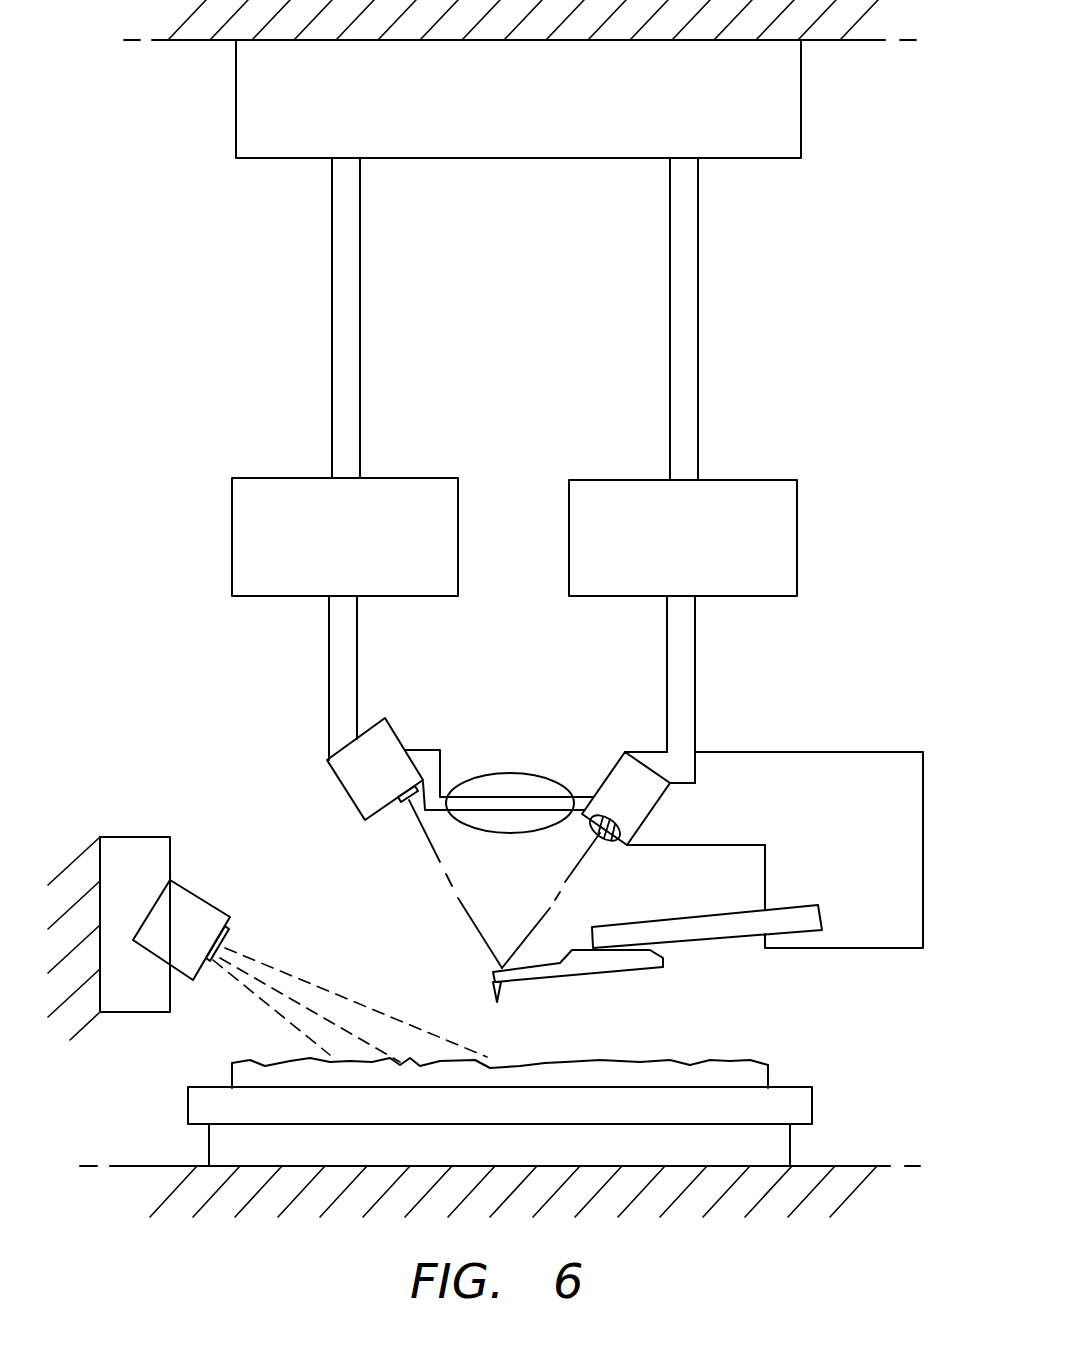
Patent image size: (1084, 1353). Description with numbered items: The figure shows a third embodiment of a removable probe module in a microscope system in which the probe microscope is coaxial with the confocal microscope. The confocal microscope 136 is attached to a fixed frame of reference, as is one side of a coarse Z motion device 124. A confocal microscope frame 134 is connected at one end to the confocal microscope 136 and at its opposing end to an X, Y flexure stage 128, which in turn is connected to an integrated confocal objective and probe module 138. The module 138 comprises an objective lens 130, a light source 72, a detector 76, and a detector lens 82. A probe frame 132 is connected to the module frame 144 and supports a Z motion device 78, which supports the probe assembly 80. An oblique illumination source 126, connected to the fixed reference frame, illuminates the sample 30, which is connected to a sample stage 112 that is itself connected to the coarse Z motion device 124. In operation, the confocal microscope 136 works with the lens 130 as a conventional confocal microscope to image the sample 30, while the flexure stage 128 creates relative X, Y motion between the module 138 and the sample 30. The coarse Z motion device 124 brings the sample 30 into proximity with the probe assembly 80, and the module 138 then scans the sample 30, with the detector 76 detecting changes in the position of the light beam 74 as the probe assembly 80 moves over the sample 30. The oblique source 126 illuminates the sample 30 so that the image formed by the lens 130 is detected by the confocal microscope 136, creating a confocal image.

The confocal microscope 136 is at (803, 112).
The confocal microscope frame 134 is at (700, 283).
The X, Y flexure stage 128 is at (762, 491).
The module frame 144 is at (697, 670).
The probe frame 132 is at (873, 763).
The integrated confocal objective and probe module 138 is at (242, 690).
The objective lens 130 is at (507, 775).
The detector 76 is at (600, 782).
The light source 72 is at (335, 773).
The detector lens 82 is at (614, 842).
The light beam 74 is at (465, 915).
The Z motion device 78 is at (805, 912).
The probe assembly 80 is at (622, 962).
The oblique illumination source 126 is at (205, 905).
The sample 30 is at (715, 1068).
The sample stage 112 is at (792, 1098).
The coarse Z motion device 124 is at (790, 1145).